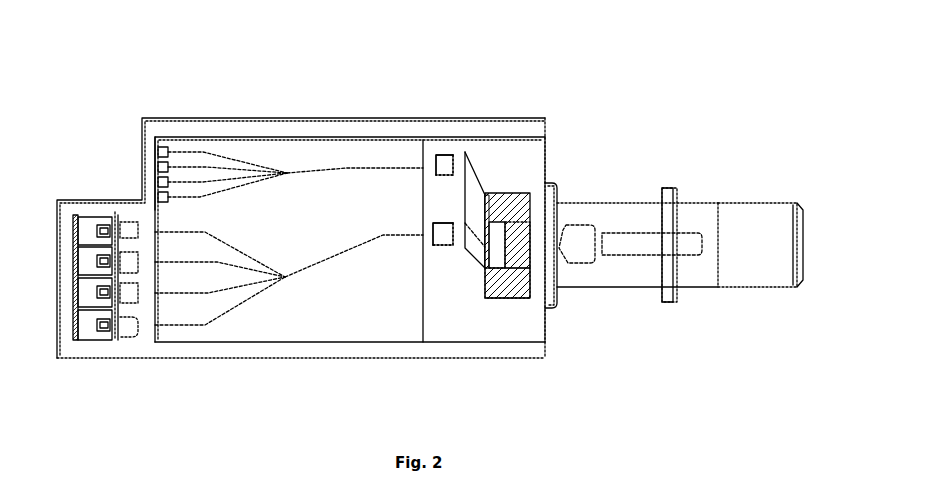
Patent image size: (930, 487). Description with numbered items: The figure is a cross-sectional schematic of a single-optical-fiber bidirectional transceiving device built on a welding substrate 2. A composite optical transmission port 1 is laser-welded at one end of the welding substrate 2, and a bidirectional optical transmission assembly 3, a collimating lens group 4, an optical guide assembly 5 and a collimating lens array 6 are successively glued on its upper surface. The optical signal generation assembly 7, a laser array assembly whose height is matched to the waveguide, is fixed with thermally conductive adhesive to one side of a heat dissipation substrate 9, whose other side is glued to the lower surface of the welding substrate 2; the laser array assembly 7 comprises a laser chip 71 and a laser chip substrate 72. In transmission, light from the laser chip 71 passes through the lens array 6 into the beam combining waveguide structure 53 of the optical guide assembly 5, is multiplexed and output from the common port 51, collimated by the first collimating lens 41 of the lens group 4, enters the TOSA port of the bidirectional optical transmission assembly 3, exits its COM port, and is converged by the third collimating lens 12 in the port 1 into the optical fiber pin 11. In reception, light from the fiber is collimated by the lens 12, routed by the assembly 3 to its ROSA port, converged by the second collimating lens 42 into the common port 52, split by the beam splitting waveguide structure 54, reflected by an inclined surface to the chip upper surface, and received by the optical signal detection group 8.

The composite optical transmission port 1 is at (645, 210).
The welding substrate 2 is at (543, 332).
The bidirectional optical transmission assembly 3 is at (530, 192).
The collimating lens group 4 is at (428, 142).
The first collimating lens 41 is at (437, 223).
The second collimating lens 42 is at (443, 155).
The optical guide assembly 5 is at (291, 155).
The common port 51 is at (426, 232).
The common port 52 is at (426, 161).
The beam combining waveguide structure 53 is at (185, 325).
The beam splitting waveguide structure 54 is at (169, 146).
The collimating lens array 6 is at (132, 340).
The optical signal generation assembly 7 is at (92, 338).
The laser chip 71 is at (100, 225).
The laser chip substrate 72 is at (84, 236).
The optical signal detection group 8 is at (157, 148).
The heat dissipation substrate 9 is at (508, 353).
The optical fiber pin 11 is at (690, 248).
The third collimating lens 12 is at (573, 262).